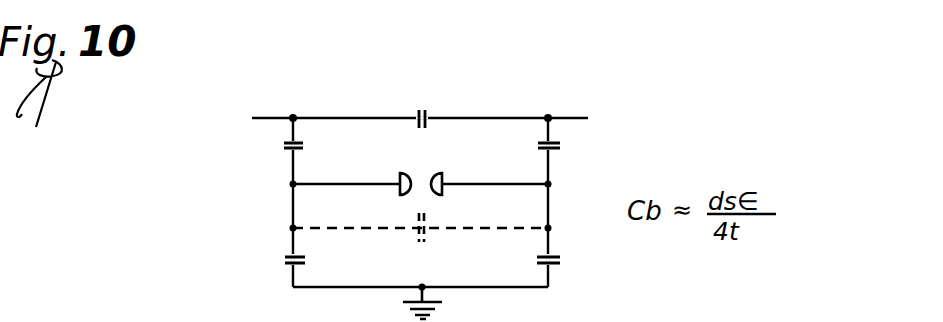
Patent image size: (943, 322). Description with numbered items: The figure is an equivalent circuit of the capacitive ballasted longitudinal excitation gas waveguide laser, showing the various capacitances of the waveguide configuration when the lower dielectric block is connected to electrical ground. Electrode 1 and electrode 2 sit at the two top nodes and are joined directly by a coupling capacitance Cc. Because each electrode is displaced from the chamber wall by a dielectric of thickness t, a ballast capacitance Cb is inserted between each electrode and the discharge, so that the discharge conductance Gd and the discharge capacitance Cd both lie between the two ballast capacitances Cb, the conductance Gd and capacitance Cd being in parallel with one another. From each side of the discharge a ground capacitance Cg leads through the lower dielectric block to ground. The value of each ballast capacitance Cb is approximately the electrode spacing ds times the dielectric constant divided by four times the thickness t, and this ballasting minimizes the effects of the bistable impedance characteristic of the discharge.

The electrode 1 is at (548, 115).
The electrode 2 is at (326, 80).
The coupling capacitance Cc is at (422, 106).
The ballast capacitance Cb is at (423, 151).
The discharge conductance Gd is at (421, 171).
The discharge capacitance Cd is at (413, 244).
The ground capacitance Cg is at (423, 266).